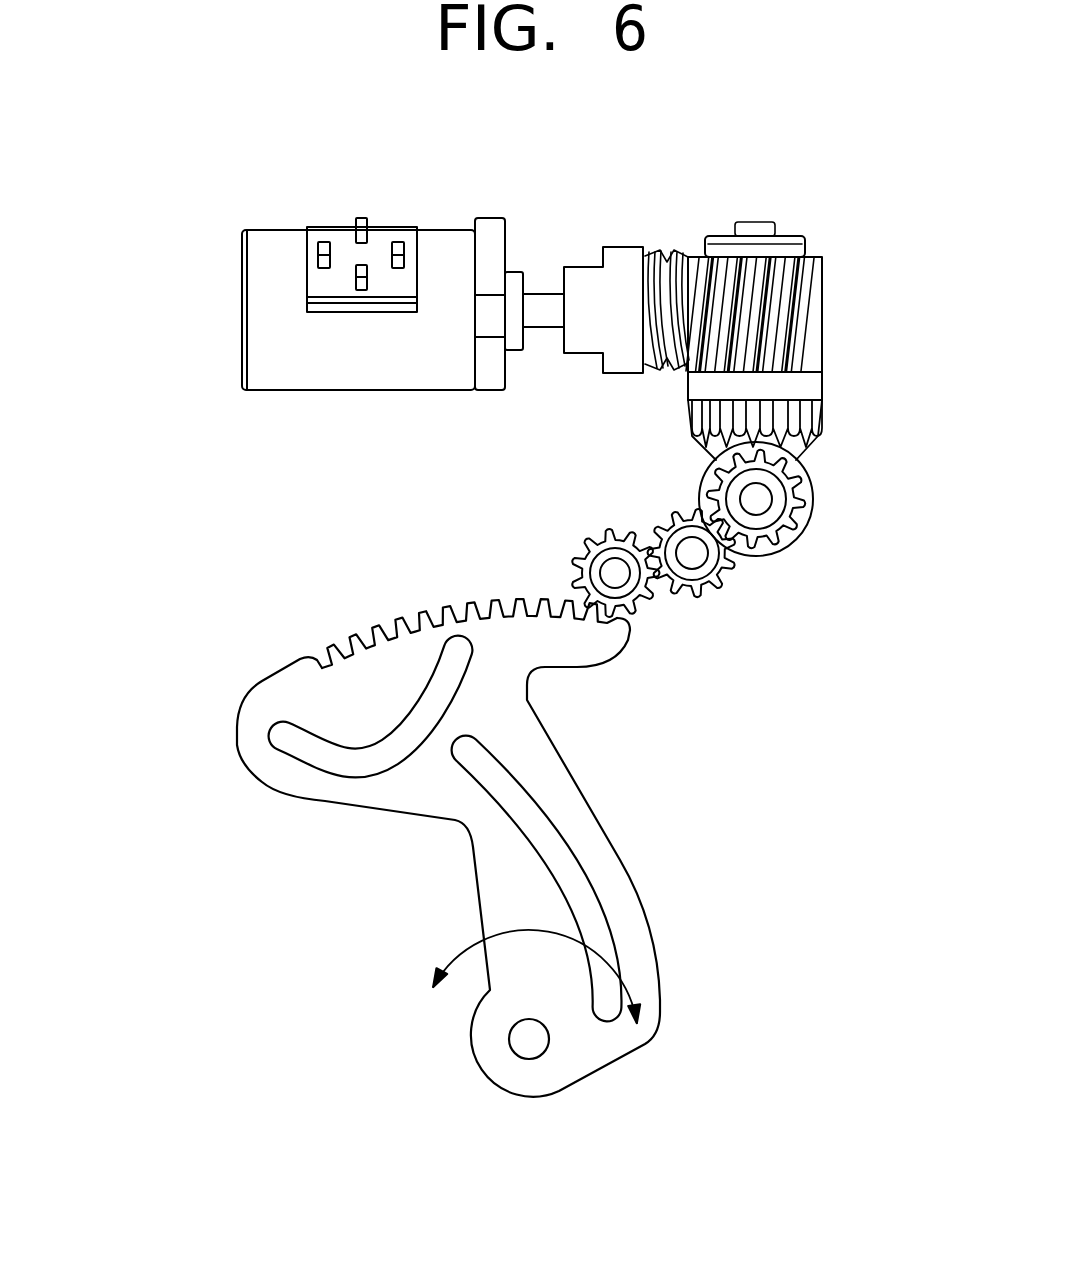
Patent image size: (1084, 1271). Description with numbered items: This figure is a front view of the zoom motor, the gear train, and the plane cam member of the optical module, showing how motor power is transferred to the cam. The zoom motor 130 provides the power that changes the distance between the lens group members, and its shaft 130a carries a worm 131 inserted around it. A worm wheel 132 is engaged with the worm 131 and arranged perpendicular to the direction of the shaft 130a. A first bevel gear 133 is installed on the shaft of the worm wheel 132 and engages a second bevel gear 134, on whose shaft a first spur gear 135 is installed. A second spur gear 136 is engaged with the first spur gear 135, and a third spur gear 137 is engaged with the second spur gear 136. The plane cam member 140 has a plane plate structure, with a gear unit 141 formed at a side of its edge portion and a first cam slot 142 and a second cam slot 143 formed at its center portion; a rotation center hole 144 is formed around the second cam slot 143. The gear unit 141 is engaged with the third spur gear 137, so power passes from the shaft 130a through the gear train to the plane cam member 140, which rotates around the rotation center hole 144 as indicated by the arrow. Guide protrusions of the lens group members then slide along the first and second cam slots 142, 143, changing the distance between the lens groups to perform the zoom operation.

The zoom motor 130 is at (274, 250).
The shaft 130a is at (543, 305).
The worm 131 is at (668, 250).
The worm wheel 132 is at (822, 316).
The first bevel gear 133 is at (807, 413).
The second bevel gear 134 is at (803, 505).
The first spur gear 135 is at (778, 540).
The second spur gear 136 is at (677, 517).
The third spur gear 137 is at (583, 553).
The plane cam member 140 is at (393, 853).
The gear unit 141 is at (423, 612).
The first cam slot 142 is at (337, 762).
The second cam slot 143 is at (552, 833).
The rotation center hole 144 is at (529, 1039).